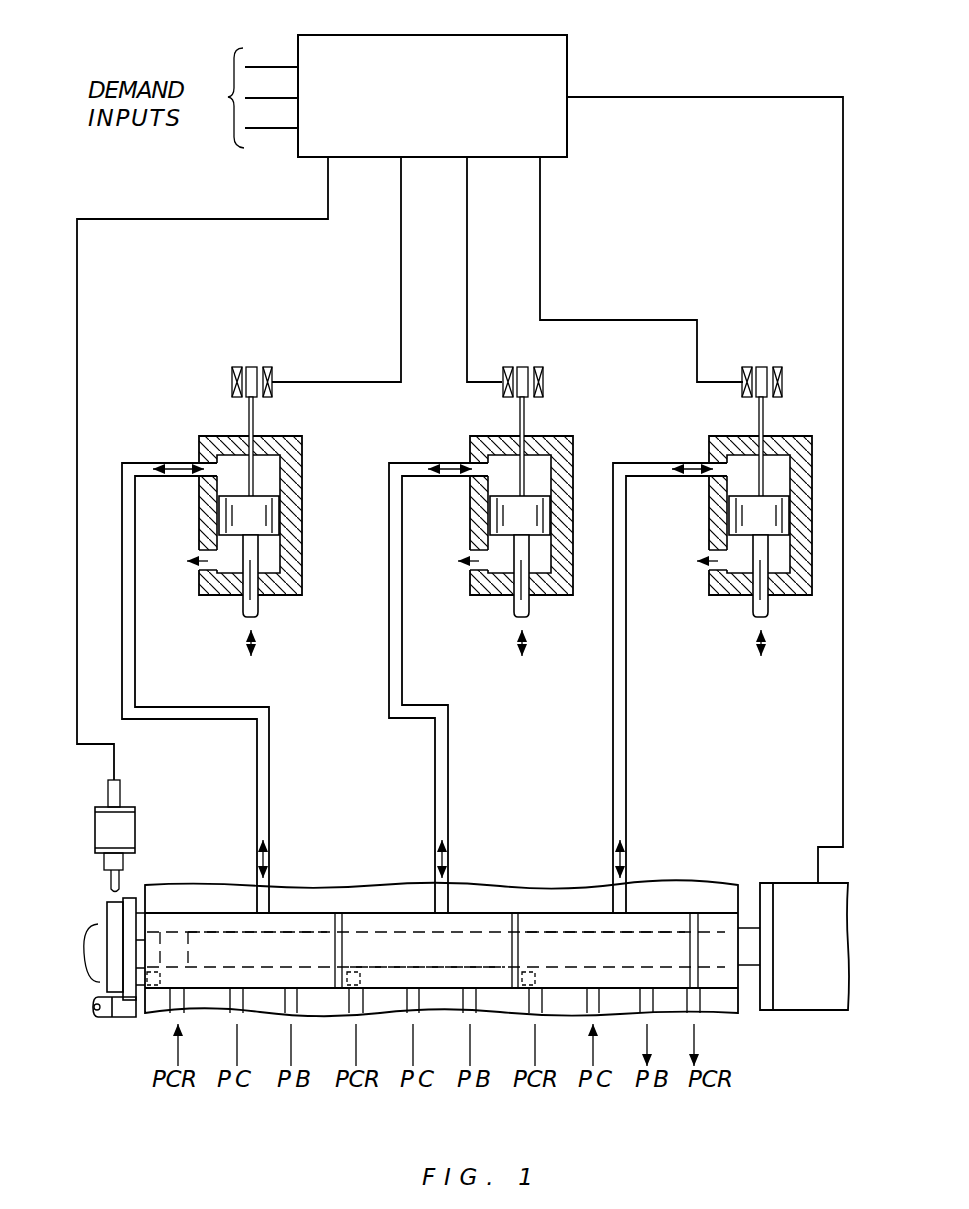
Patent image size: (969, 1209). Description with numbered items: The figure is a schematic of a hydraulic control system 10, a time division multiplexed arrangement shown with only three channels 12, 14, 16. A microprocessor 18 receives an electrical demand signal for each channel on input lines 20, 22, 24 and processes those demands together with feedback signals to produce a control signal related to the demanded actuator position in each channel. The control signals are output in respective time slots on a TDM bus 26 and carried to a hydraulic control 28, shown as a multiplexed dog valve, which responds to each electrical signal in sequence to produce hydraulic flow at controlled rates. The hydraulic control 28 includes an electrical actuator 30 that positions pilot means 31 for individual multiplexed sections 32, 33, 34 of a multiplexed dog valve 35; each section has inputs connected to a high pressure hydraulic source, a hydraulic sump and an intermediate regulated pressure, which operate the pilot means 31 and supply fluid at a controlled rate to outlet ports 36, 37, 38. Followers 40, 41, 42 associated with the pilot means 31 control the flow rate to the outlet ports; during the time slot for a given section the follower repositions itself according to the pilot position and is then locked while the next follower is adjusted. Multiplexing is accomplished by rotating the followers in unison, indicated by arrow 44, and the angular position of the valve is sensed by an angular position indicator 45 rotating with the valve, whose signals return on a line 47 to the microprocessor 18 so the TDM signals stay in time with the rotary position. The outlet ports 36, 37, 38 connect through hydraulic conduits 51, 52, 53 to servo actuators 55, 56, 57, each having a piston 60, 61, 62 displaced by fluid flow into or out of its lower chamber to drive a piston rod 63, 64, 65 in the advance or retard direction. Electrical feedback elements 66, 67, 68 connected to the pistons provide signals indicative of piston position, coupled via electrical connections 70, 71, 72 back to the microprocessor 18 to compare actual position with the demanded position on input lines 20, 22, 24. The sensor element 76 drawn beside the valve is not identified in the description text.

The hydraulic control system 10 is at (769, 36).
The channel 12 is at (683, 545).
The channel 14 is at (439, 530).
The channel 16 is at (176, 538).
The microprocessor 18 is at (567, 58).
The input line 20 is at (275, 61).
The input line 22 is at (275, 93).
The input line 24 is at (275, 123).
The TDM bus 26 is at (790, 97).
The hydraulic control 28 is at (544, 873).
The electrical actuator means 30 is at (824, 948).
The pilot means 31 is at (722, 928).
The multiplexed section 32 is at (577, 880).
The multiplexed section 33 is at (381, 878).
The multiplexed section 34 is at (224, 878).
The multiplexed dog valve 35 is at (508, 888).
The outlet port 36 is at (620, 893).
The outlet port 37 is at (443, 893).
The outlet port 38 is at (268, 893).
The follower 40 is at (648, 963).
The follower 41 is at (443, 963).
The follower 42 is at (278, 963).
The arrow 44 is at (85, 962).
The angular position indicator 45 is at (117, 915).
The line 47 is at (255, 221).
The hydraulic conduit 51 is at (627, 663).
The hydraulic conduit 52 is at (402, 662).
The hydraulic conduit 53 is at (135, 657).
The servo actuator 55 is at (798, 440).
The servo actuator 56 is at (573, 445).
The servo actuator 57 is at (302, 448).
The piston 60 is at (740, 512).
The piston 61 is at (492, 530).
The piston 62 is at (268, 514).
The piston rod 63 is at (770, 617).
The piston rod 64 is at (528, 613).
The piston rod 65 is at (258, 612).
The electrical feedback element 66 is at (783, 383).
The electrical feedback element 67 is at (542, 375).
The electrical feedback element 68 is at (272, 373).
The electrical connection 70 is at (540, 254).
The electrical connection 71 is at (467, 285).
The electrical connection 72 is at (401, 291).
The position sensor 76 is at (135, 822).